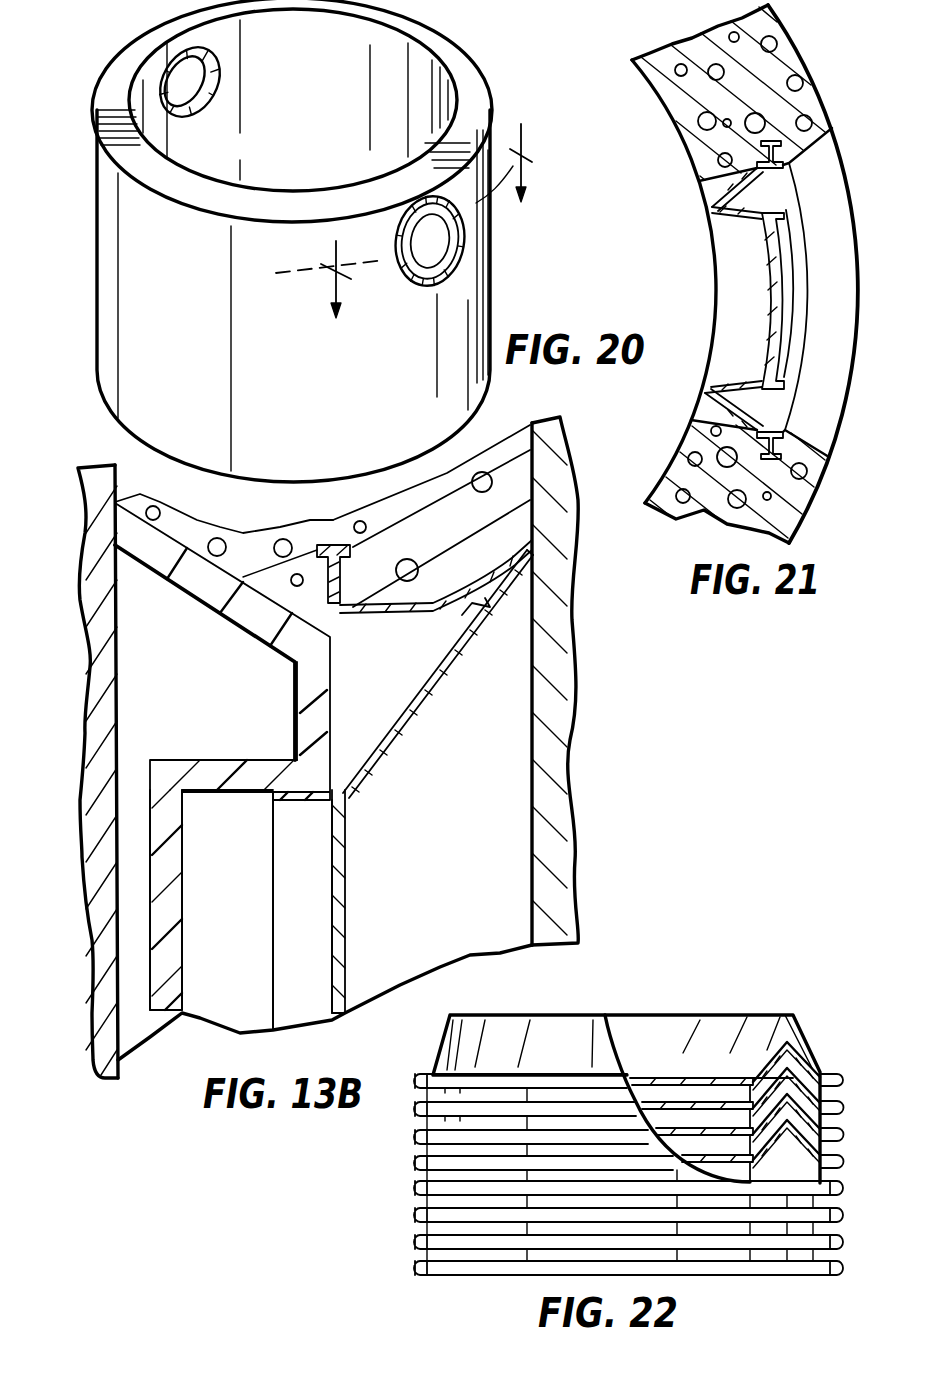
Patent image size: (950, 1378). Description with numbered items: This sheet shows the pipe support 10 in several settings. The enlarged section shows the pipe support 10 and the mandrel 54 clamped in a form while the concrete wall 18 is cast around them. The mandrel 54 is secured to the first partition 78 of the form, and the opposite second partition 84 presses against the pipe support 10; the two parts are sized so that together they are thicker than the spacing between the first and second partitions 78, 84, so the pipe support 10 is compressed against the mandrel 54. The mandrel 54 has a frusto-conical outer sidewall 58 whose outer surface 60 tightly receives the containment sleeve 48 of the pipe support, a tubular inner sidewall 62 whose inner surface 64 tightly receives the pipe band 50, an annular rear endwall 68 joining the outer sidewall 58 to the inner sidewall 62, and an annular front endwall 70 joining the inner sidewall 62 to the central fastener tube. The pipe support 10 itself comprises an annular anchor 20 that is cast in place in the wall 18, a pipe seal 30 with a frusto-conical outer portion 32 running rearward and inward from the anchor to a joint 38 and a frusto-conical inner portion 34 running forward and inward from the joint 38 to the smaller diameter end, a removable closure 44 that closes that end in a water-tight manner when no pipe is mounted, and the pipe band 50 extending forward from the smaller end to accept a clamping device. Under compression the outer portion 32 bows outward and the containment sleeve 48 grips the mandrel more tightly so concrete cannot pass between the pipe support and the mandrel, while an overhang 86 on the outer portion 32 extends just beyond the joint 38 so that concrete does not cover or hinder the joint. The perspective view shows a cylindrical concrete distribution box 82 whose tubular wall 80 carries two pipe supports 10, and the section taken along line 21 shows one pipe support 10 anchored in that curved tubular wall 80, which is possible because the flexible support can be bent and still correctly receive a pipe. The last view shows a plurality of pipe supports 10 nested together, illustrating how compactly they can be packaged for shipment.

In FIG. 20, the pipe support 10 is at (203, 68).
In FIG. 21, the pipe support 10 is at (802, 283).
In FIG. 13B, the pipe support 10 is at (478, 781).
In FIG. 22, the pipe support 10 is at (670, 1015).
In FIG. 13B, the wall 18 is at (505, 497).
In FIG. 13B, the annular anchor 20 is at (333, 540).
In FIG. 20, the section line 21 is at (407, 239).
In FIG. 13B, the pipe seal 30 is at (480, 655).
In FIG. 13B, the outer portion 32 is at (397, 613).
In FIG. 13B, the inner portion 34 is at (433, 683).
In FIG. 13B, the joint 38 is at (478, 606).
In FIG. 13B, the removable closure 44 is at (340, 913).
In FIG. 13B, the containment sleeve 48 is at (247, 617).
In FIG. 13B, the pipe band 50 is at (298, 803).
In FIG. 13B, the mandrel 54 is at (175, 1035).
In FIG. 13B, the outer sidewall 58 is at (200, 577).
In FIG. 13B, the outer surface 60 is at (183, 540).
In FIG. 13B, the inner sidewall 62 is at (210, 777).
In FIG. 13B, the inner surface 64 is at (242, 793).
In FIG. 13B, the rear endwall 68 is at (310, 723).
In FIG. 13B, the front endwall 70 is at (172, 898).
In FIG. 13B, the first partition 78 is at (97, 597).
In FIG. 20, the tubular wall 80 is at (468, 105).
In FIG. 21, the tubular wall 80 is at (782, 47).
In FIG. 20, the cylindrical concrete distribution box 82 is at (322, 241).
In FIG. 13B, the second partition 84 is at (560, 617).
In FIG. 13B, the overhang 86 is at (535, 553).